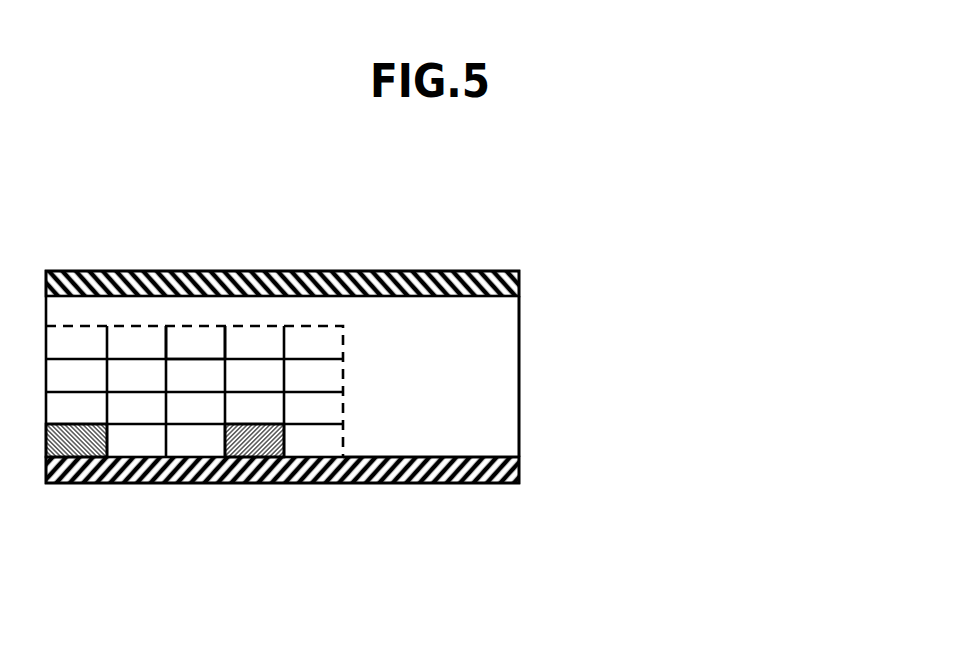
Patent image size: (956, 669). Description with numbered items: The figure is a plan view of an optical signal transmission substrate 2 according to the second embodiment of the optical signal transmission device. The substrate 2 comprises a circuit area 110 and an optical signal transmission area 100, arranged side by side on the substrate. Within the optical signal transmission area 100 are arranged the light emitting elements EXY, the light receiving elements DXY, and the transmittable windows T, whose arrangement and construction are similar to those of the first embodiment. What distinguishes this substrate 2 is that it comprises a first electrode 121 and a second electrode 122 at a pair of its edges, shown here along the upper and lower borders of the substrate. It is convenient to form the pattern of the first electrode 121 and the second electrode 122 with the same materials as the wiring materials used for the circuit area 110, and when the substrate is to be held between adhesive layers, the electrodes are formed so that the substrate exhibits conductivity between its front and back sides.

The optical signal transmission substrate 2 is at (450, 631).
The first electrode 121 is at (519, 283).
The second electrode 122 is at (519, 470).
The optical signal transmission area 100 is at (305, 326).
The circuit area 110 is at (423, 440).
The transmittable window T is at (177, 358).
The light emitting element EXY is at (84, 448).
The light receiving element DXY is at (261, 450).